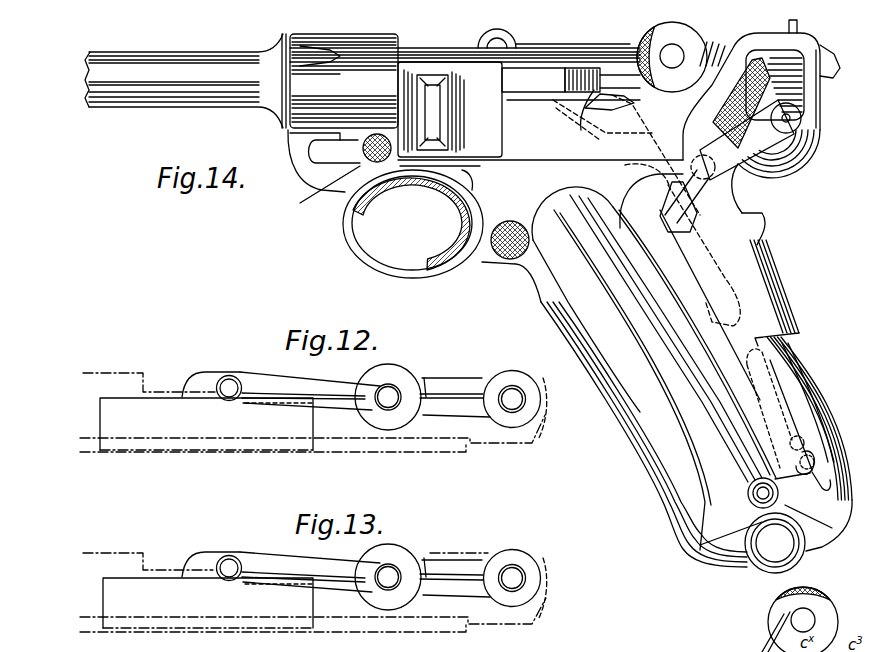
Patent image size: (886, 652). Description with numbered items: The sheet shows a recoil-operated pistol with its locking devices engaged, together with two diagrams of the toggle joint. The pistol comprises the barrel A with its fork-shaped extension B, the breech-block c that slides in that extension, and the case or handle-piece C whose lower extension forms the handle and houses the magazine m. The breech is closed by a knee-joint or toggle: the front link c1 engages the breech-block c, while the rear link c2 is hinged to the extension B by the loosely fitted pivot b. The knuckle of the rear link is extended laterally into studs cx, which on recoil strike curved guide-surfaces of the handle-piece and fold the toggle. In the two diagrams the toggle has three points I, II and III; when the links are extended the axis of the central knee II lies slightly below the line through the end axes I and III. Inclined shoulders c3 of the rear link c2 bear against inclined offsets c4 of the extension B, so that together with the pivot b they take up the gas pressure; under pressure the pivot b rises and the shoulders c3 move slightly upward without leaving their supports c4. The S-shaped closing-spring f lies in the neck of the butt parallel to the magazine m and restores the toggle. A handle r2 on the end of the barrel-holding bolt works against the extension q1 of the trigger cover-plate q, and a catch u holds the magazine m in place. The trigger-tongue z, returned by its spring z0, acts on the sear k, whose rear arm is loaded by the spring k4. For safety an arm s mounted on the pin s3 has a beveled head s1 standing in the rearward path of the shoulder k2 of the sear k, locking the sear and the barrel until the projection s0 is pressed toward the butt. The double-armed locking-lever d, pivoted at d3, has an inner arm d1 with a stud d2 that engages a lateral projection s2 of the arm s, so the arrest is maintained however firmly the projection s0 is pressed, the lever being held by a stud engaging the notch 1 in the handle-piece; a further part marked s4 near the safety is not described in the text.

In FIG. 14, the barrel A is at (196, 57).
In FIG. 14, the fork-shaped extension B is at (378, 62).
In FIG. 14, the handle-piece C is at (528, 312).
In FIG. 14, the trigger cover-plate q is at (450, 109).
In FIG. 14, the extension of trigger cover-plate q1 is at (330, 188).
In FIG. 14, the handle r2 is at (350, 148).
In FIG. 14, the trigger-tongue z is at (463, 218).
In FIG. 14, the spring z0 is at (476, 180).
In FIG. 14, the catch u is at (512, 222).
In FIG. 14, the sear k is at (524, 96).
In FIG. 14, the shoulder of the sear k2 is at (533, 80).
In FIG. 14, the spring k4 is at (646, 98).
In FIG. 14, the front link c1 is at (568, 46).
In FIG. 12, the front link c1 is at (310, 382).
In FIG. 13, the front link c1 is at (310, 563).
In FIG. 12, the rear link c2 is at (455, 385).
In FIG. 13, the rear link c2 is at (455, 565).
In FIG. 14, the inclined shoulders c3 is at (707, 44).
In FIG. 12, the inclined shoulders c3 is at (427, 380).
In FIG. 13, the inclined shoulders c3 is at (427, 560).
In FIG. 14, the inclined offsets c4 is at (722, 48).
In FIG. 12, the inclined offsets c4 is at (430, 389).
In FIG. 13, the inclined offsets c4 is at (430, 569).
In FIG. 14, the studs cx is at (672, 57).
In FIG. 12, the breech-block c is at (312, 412).
In FIG. 13, the breech-block c is at (313, 592).
In FIG. 14, the arm s is at (640, 181).
In FIG. 14, the projection s0 is at (710, 305).
In FIG. 14, the beveled head s1 is at (626, 152).
In FIG. 14, the lateral projection s2 is at (683, 232).
In FIG. 14, the pin s3 is at (836, 452).
In FIG. 14, the safety spring s4 is at (798, 380).
In FIG. 14, the closing-spring f is at (822, 404).
In FIG. 14, the double-armed lever d is at (742, 140).
In FIG. 14, the inner arm d1 is at (688, 201).
In FIG. 14, the laterally-projecting stud d2 is at (658, 232).
In FIG. 14, the pivot d3 is at (762, 188).
In FIG. 14, the notch 1 is at (786, 118).
In FIG. 14, the magazine m is at (679, 384).
In FIG. 12, the pivot b is at (528, 400).
In FIG. 13, the pivot b is at (528, 578).
In FIG. 12, the end point of toggle-joint I is at (212, 380).
In FIG. 13, the end point of toggle-joint I is at (212, 560).
In FIG. 12, the central point of toggle-joint II is at (388, 397).
In FIG. 13, the central point of toggle-joint II is at (388, 577).
In FIG. 12, the end point of toggle-joint III is at (512, 399).
In FIG. 13, the end point of toggle-joint III is at (512, 578).